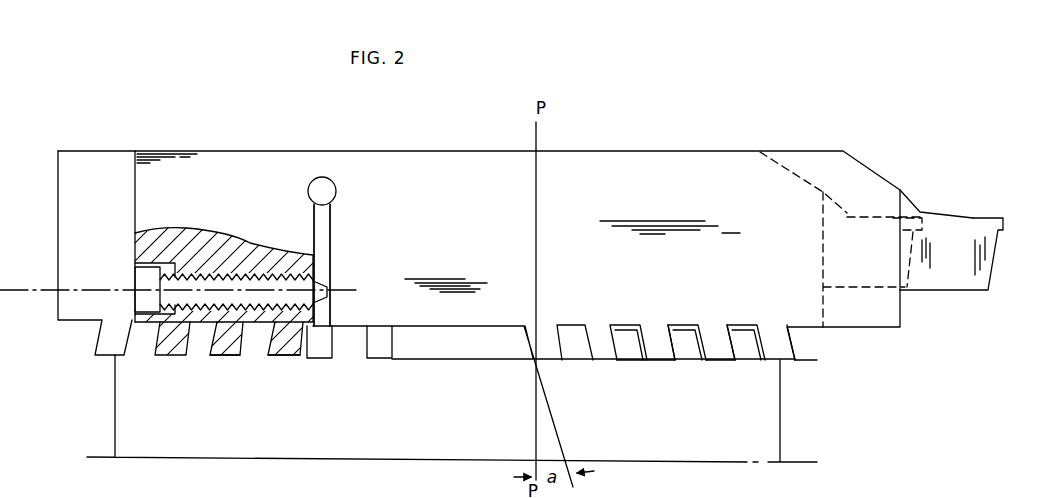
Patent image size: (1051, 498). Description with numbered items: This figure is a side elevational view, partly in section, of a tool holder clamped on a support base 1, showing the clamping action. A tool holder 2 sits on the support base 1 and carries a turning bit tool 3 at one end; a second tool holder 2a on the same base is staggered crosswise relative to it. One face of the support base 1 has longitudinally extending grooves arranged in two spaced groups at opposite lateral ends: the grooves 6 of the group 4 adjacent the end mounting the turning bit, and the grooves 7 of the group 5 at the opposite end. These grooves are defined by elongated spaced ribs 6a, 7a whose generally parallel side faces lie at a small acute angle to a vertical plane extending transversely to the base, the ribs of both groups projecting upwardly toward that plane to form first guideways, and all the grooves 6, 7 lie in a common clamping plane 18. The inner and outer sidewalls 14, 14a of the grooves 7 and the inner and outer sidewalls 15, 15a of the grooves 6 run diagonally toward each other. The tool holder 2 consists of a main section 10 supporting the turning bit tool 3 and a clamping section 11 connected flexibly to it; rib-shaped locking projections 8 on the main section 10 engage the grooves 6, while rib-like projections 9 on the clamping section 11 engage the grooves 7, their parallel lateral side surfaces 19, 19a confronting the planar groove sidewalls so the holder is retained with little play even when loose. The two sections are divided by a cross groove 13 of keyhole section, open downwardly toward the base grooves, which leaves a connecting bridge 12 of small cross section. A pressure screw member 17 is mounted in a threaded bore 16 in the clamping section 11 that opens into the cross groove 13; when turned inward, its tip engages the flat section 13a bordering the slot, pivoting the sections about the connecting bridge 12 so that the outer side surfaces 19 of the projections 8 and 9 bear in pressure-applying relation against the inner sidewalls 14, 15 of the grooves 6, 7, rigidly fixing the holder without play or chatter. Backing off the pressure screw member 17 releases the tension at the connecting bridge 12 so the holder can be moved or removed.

The support base 1 is at (210, 444).
The tool holder 2 is at (617, 182).
The tool holder 2a is at (84, 176).
The turning bit tool 3 is at (982, 261).
The group of grooves 4 is at (707, 343).
The group of grooves 5 is at (216, 360).
The groove 6 is at (703, 342).
The rib 6a is at (688, 348).
The groove 7 is at (337, 356).
The rib 7a is at (314, 338).
The rib-shaped locking projection 8 is at (655, 362).
The rib-like locking projection 9 is at (230, 330).
The main section 10 is at (471, 184).
The clamping section 11 is at (177, 186).
The connecting bridge 12 is at (317, 170).
The cross groove 13 is at (333, 222).
The flat section 13a is at (331, 241).
The inner sidewall 14 is at (159, 345).
The outer sidewall 14a is at (138, 345).
The inner sidewall 15 is at (671, 351).
The outer sidewall 15a is at (642, 362).
The threaded bore 16 is at (214, 275).
The pressure screw member 17 is at (138, 283).
The clamping plane 18 is at (278, 361).
The outer lateral side surface 19 is at (773, 345).
The lateral side surface 19a is at (732, 343).